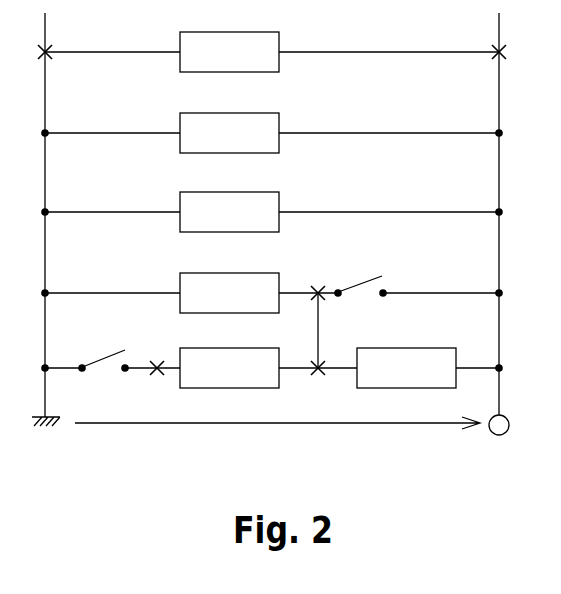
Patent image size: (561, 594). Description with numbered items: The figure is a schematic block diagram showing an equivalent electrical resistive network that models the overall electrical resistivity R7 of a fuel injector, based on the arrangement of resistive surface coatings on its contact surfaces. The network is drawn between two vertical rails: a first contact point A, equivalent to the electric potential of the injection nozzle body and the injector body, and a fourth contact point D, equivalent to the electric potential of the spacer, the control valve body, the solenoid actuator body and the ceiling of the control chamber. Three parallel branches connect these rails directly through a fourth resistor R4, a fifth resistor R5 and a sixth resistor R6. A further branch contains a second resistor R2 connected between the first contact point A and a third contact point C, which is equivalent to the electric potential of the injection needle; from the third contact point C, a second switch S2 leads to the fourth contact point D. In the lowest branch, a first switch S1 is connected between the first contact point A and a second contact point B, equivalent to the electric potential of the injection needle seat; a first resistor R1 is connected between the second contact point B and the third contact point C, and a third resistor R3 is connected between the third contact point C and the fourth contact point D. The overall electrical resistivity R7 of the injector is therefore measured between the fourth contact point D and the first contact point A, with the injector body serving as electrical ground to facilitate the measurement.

The first contact point A is at (54, 41).
The second contact point B is at (152, 382).
The third contact point C is at (318, 331).
The fourth contact point D is at (507, 47).
The first resistor R1 is at (268, 368).
The second resistor R2 is at (191, 293).
The third resistor R3 is at (428, 368).
The fourth resistor R4 is at (272, 212).
The fifth resistor R5 is at (272, 133).
The sixth resistor R6 is at (272, 52).
The overall electrical resistivity R7 is at (277, 437).
The first switch S1 is at (102, 362).
The second switch S2 is at (363, 283).